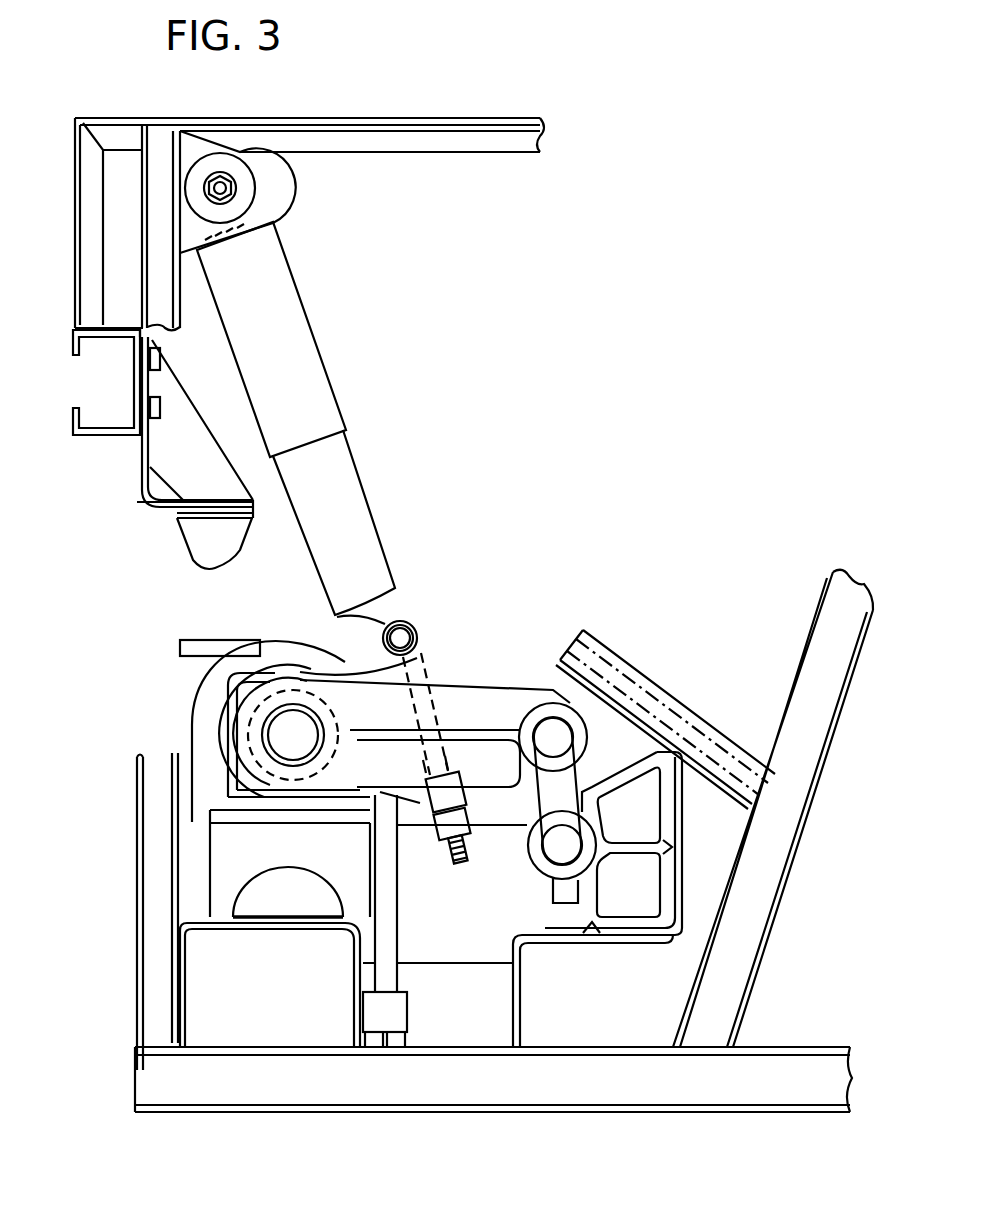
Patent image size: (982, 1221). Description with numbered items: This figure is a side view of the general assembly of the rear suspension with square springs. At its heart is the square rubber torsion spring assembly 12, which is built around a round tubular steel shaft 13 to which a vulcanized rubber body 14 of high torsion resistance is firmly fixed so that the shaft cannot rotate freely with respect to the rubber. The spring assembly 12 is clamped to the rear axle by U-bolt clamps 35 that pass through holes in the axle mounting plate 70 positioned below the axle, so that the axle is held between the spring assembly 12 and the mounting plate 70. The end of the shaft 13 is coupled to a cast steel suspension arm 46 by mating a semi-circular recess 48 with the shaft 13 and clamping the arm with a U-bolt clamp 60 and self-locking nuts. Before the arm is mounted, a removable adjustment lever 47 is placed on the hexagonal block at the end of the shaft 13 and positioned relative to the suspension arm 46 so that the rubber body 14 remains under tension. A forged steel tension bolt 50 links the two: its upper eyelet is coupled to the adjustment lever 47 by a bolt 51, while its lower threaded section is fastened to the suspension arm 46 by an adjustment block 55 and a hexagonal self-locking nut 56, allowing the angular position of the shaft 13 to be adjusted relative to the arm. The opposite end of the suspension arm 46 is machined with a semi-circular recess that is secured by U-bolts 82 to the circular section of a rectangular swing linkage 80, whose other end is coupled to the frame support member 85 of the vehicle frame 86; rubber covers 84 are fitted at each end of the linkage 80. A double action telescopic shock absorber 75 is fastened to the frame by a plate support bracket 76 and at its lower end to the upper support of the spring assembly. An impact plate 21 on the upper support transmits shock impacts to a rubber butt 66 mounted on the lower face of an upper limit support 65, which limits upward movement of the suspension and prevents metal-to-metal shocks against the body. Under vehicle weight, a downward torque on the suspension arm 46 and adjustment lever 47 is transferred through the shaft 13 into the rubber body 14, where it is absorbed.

The vehicle frame 86 is at (120, 135).
The plate support bracket 76 is at (262, 188).
The shock absorber 75 is at (298, 343).
The support for an upper limit 65 is at (140, 478).
The rubber butt 66 is at (212, 540).
The impact plate 21 is at (180, 648).
The square rubber torsion spring assembly 12 is at (228, 792).
The steel shaft 13 is at (288, 735).
The U-bolt clamp 60 is at (243, 710).
The rubber body 14 is at (250, 795).
The semi-circular recess 48 is at (318, 785).
The suspension arm 46 is at (478, 703).
The adjustment lever 47 is at (353, 662).
The bolt 51 is at (413, 625).
The tension bolt 50 is at (418, 688).
The adjustment block 55 is at (432, 803).
The hexagonal self-locking nut 56 is at (470, 836).
The rubber covers 84 is at (572, 740).
The swing linkage 80 is at (562, 790).
The frame support member 85 is at (665, 878).
The U-bolts 82 is at (605, 700).
The U-bolt clamp 35 is at (192, 897).
The axle mounting plate 70 is at (410, 1012).